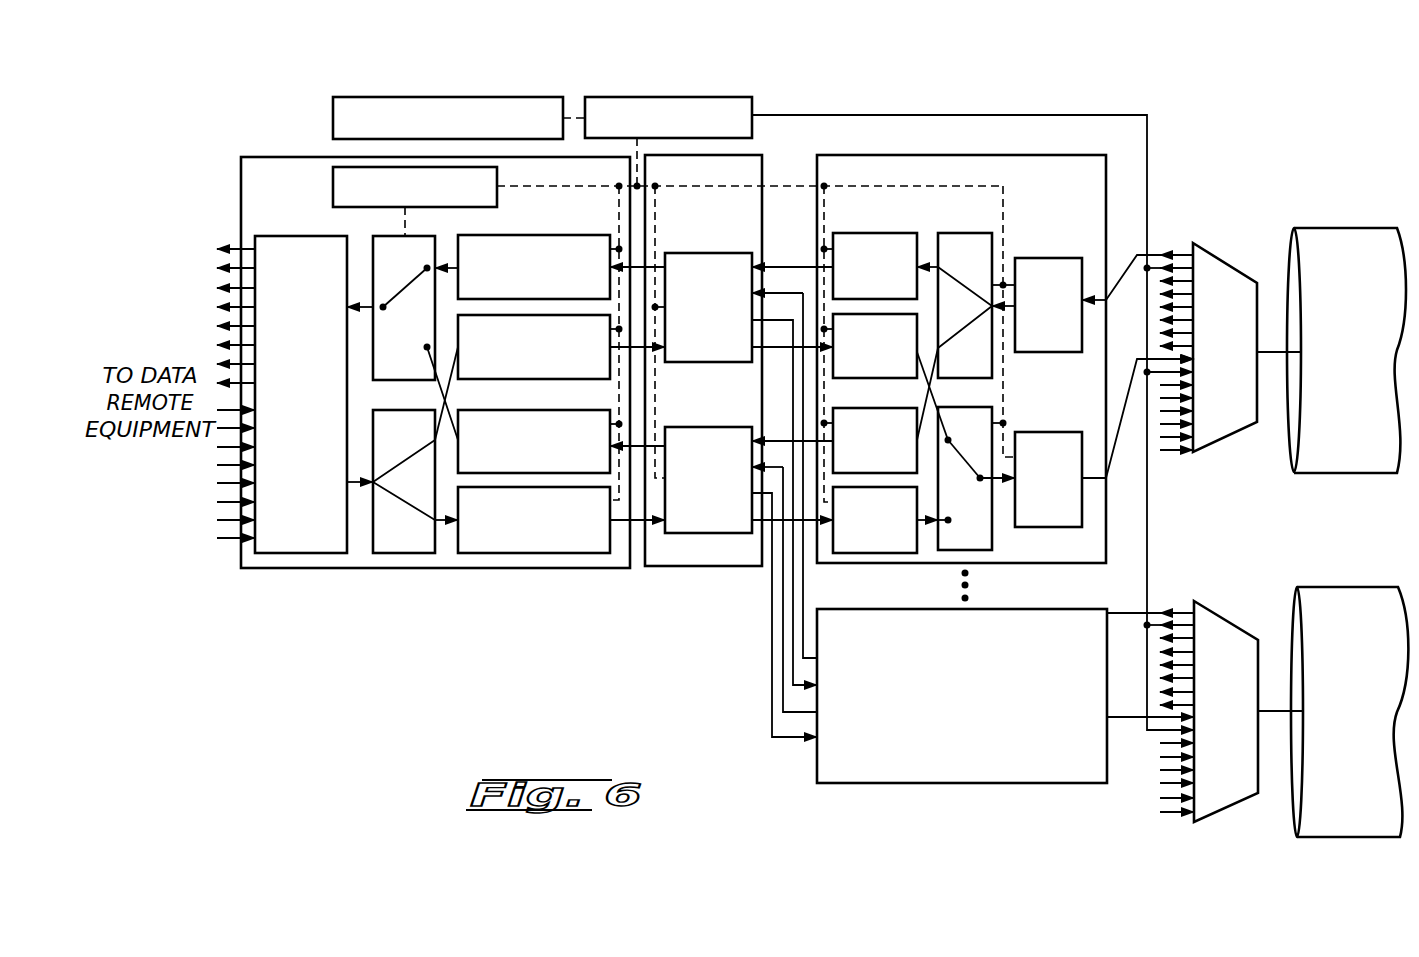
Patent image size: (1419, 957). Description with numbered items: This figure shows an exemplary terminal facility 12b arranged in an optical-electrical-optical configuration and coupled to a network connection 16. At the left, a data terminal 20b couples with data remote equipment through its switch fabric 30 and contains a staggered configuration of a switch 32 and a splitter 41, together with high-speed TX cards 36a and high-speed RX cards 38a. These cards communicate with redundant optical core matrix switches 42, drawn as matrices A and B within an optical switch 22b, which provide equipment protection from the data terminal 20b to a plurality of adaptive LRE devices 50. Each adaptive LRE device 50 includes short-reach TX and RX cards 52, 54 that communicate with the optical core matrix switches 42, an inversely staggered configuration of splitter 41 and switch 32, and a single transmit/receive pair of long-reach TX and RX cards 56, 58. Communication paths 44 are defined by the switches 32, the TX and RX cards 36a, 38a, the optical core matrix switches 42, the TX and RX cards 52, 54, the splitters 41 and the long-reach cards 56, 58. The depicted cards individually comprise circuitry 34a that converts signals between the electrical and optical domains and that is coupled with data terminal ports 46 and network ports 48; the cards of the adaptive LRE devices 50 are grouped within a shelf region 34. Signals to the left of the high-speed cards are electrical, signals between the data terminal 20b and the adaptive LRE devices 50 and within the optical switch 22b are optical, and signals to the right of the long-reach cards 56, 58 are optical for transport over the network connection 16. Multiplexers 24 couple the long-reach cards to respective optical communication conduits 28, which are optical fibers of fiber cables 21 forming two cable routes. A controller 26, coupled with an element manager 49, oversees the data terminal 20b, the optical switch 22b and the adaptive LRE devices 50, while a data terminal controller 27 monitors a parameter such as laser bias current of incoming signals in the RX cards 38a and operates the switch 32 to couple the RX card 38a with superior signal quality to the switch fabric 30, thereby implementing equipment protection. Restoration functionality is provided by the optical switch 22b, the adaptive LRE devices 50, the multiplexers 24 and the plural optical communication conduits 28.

The element manager 49 is at (466, 97).
The controller 26 is at (645, 97).
The data terminal 20b is at (283, 157).
The data terminal controller 27 is at (333, 190).
The switch fabric 30 is at (295, 568).
The switch 32 is at (392, 236).
The splitter 41 is at (405, 568).
The communication paths 44 is at (338, 340).
The high-speed RX cards 38a is at (505, 235).
The high-speed TX cards 36a is at (513, 380).
The optical switch 22b is at (762, 252).
The optical core matrix switches 42 is at (705, 362).
The data terminal ports 46 is at (683, 253).
The network ports 48 is at (733, 253).
The transponder shelf 34 is at (1085, 237).
The short-reach circuitry 34a is at (862, 232).
The short-reach TX cards 52 is at (920, 247).
The short-reach RX cards 54 is at (870, 378).
The long-reach RX card 58 is at (1045, 352).
The long-reach TX card 56 is at (1045, 432).
The adaptive light regenerating equipment (LRE) devices 50 is at (1106, 506).
The multiplexers 24 is at (1228, 255).
The optical communication conduits 28 is at (1270, 356).
The fiber cable 21 is at (1347, 228).
The terminal facility 12b is at (1255, 158).
The network connection 16 is at (1382, 207).